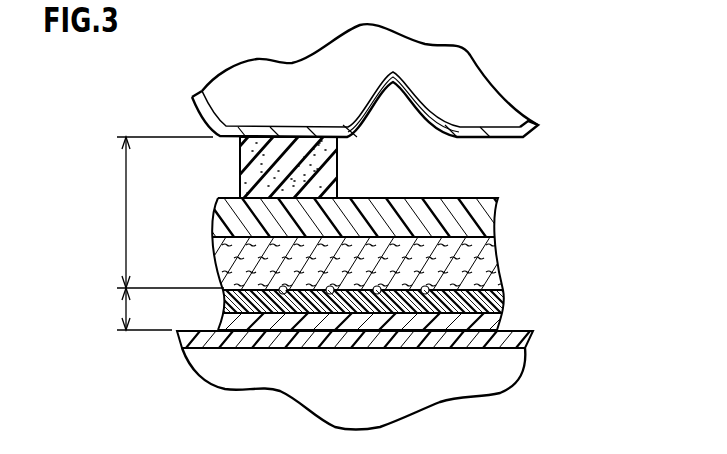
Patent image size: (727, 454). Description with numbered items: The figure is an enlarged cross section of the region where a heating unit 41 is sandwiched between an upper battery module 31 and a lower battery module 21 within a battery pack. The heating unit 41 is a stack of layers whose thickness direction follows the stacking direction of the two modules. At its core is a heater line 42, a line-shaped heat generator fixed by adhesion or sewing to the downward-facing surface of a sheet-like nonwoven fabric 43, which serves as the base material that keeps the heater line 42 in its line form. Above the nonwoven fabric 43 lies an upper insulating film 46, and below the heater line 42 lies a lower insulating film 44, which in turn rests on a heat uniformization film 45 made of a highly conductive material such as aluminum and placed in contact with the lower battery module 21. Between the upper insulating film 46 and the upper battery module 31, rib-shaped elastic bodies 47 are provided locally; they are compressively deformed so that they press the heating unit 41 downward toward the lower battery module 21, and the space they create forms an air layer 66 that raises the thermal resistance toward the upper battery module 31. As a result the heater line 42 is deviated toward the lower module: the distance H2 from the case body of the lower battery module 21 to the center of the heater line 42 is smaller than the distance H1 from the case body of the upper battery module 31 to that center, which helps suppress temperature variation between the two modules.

The upper battery module 31 is at (487, 92).
The air layer 66 is at (430, 167).
The heating unit 41 is at (373, 253).
The upper insulating film 46 is at (477, 218).
The nonwoven fabric 43 is at (485, 263).
The heater line 42 is at (278, 284).
The lower insulating film 44 is at (475, 298).
The heat uniformization film 45 is at (475, 322).
The elastic body 47 is at (242, 164).
The lower battery module 21 is at (420, 397).
The distance H1 is at (122, 217).
The distance H2 is at (122, 312).